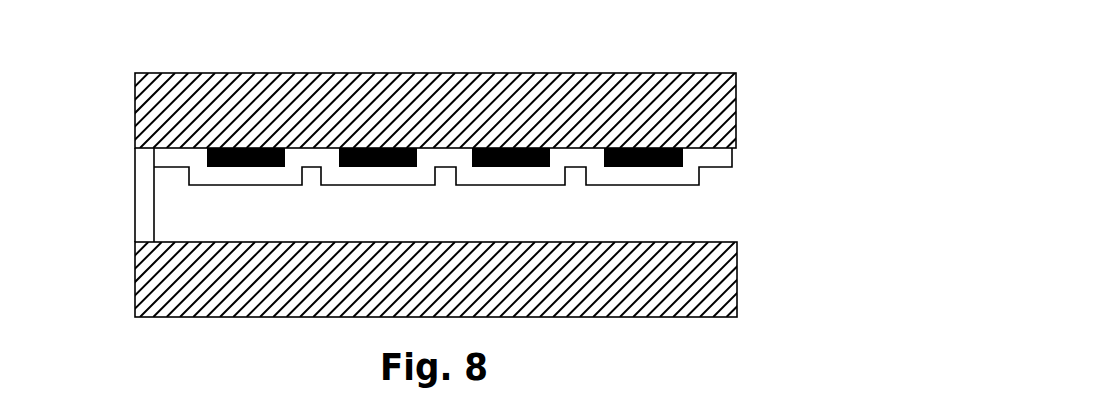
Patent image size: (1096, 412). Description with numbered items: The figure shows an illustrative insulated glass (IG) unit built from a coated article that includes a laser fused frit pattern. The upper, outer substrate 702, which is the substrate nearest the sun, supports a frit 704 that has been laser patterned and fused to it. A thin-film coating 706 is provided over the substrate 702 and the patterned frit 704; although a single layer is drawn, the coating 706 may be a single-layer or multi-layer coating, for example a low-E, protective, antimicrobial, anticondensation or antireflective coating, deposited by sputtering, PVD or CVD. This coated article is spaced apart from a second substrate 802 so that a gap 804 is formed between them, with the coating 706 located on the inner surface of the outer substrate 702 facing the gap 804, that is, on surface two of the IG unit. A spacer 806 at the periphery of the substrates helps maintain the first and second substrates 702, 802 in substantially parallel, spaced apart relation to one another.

The substrate 702 is at (736, 113).
The frit 704 is at (245, 167).
The thin-film coating 706 is at (710, 167).
The second substrate 802 is at (738, 278).
The gap 804 is at (183, 215).
The spacer 806 is at (133, 197).